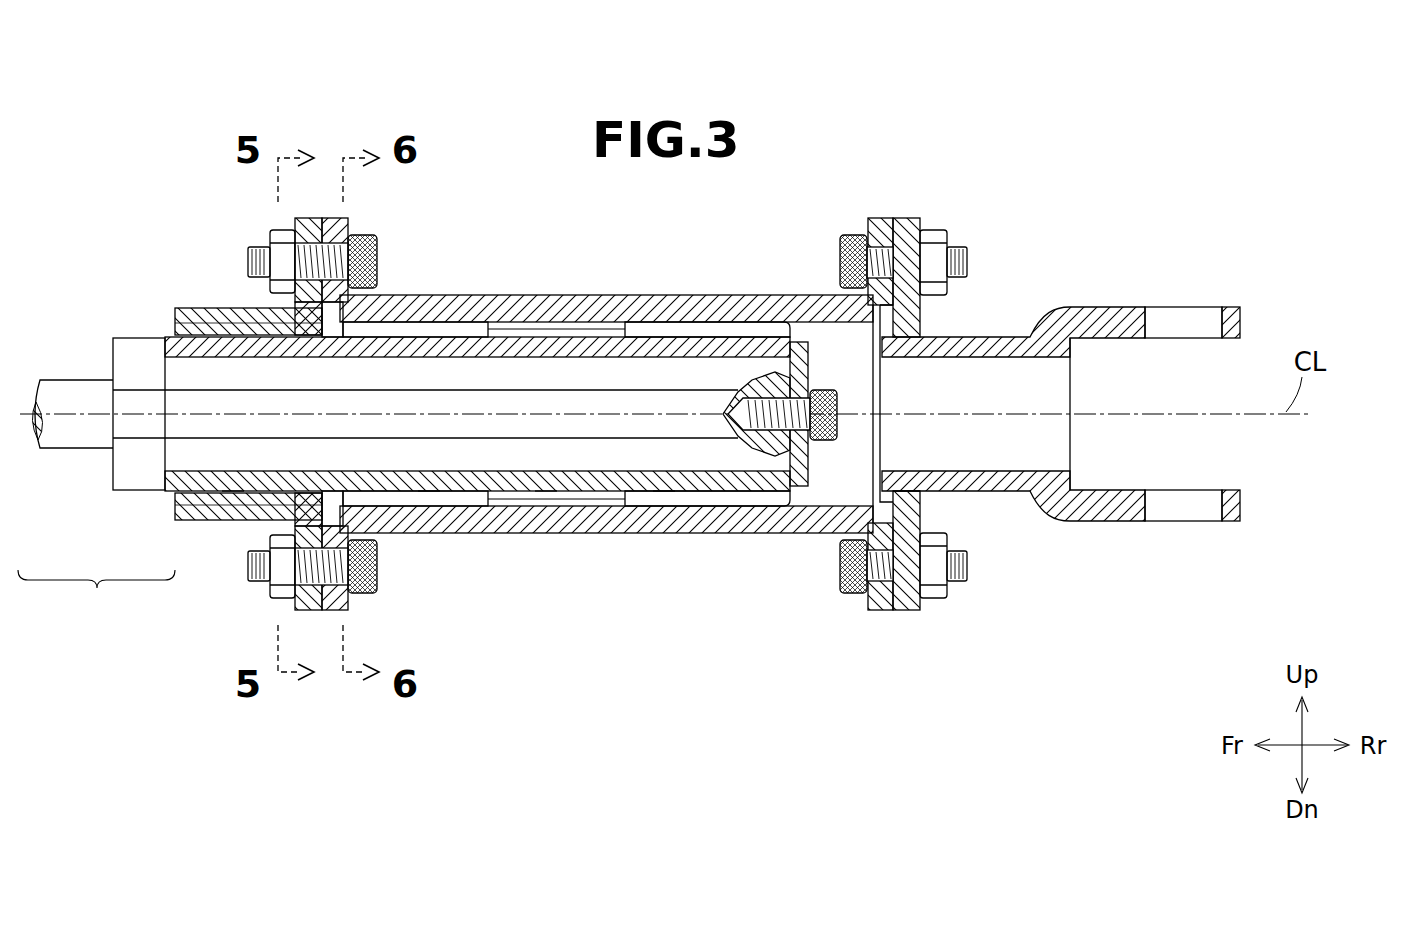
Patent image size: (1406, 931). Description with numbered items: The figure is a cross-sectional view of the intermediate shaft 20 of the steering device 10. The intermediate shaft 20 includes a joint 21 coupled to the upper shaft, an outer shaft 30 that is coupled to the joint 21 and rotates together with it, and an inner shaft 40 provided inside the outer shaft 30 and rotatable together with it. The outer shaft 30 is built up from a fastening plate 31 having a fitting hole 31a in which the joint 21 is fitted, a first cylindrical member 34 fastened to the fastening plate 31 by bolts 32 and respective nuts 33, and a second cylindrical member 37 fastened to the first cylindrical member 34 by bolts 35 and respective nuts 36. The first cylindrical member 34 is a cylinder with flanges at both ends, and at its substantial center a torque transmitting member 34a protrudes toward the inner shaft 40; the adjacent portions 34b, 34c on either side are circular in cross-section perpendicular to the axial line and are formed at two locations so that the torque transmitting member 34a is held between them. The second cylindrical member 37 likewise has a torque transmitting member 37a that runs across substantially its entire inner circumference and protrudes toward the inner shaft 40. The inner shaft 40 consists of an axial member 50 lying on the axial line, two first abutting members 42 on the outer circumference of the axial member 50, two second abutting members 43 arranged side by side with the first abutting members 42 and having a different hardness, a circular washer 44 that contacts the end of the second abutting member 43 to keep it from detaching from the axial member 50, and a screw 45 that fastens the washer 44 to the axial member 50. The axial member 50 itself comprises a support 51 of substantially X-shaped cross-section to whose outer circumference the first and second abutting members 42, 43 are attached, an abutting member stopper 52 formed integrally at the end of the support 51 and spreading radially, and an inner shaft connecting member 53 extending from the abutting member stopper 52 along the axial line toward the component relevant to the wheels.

The vehicle body structure 10 is at (1259, 96).
The intermediate shaft 20 is at (1197, 139).
The joint 21 is at (1100, 307).
The outer shaft 30 is at (768, 293).
The fastening plate 31 is at (921, 313).
The fitting hole 31a is at (903, 490).
The bolts 32 is at (851, 234).
The nuts 33 is at (937, 229).
The first cylindrical member 34 is at (626, 534).
The torque transmitting member 34a is at (545, 496).
The portion adjacent to the torque transmitting member 34b is at (663, 496).
The portion adjacent to the torque transmitting member 34c is at (428, 496).
The bolts 35 is at (361, 234).
The nuts 36 is at (283, 229).
The second cylindrical member 37 is at (222, 307).
The torque transmitting member 37a is at (233, 490).
The inner shaft 40 is at (662, 335).
The first abutting members 42 is at (165, 336).
The second abutting members 43 is at (418, 332).
The washer 44 is at (809, 464).
The screw 45 is at (826, 389).
The axial member 50 is at (96, 592).
The support 51 is at (194, 456).
The abutting member stopper 52 is at (132, 482).
The inner shaft connecting member 53 is at (76, 432).